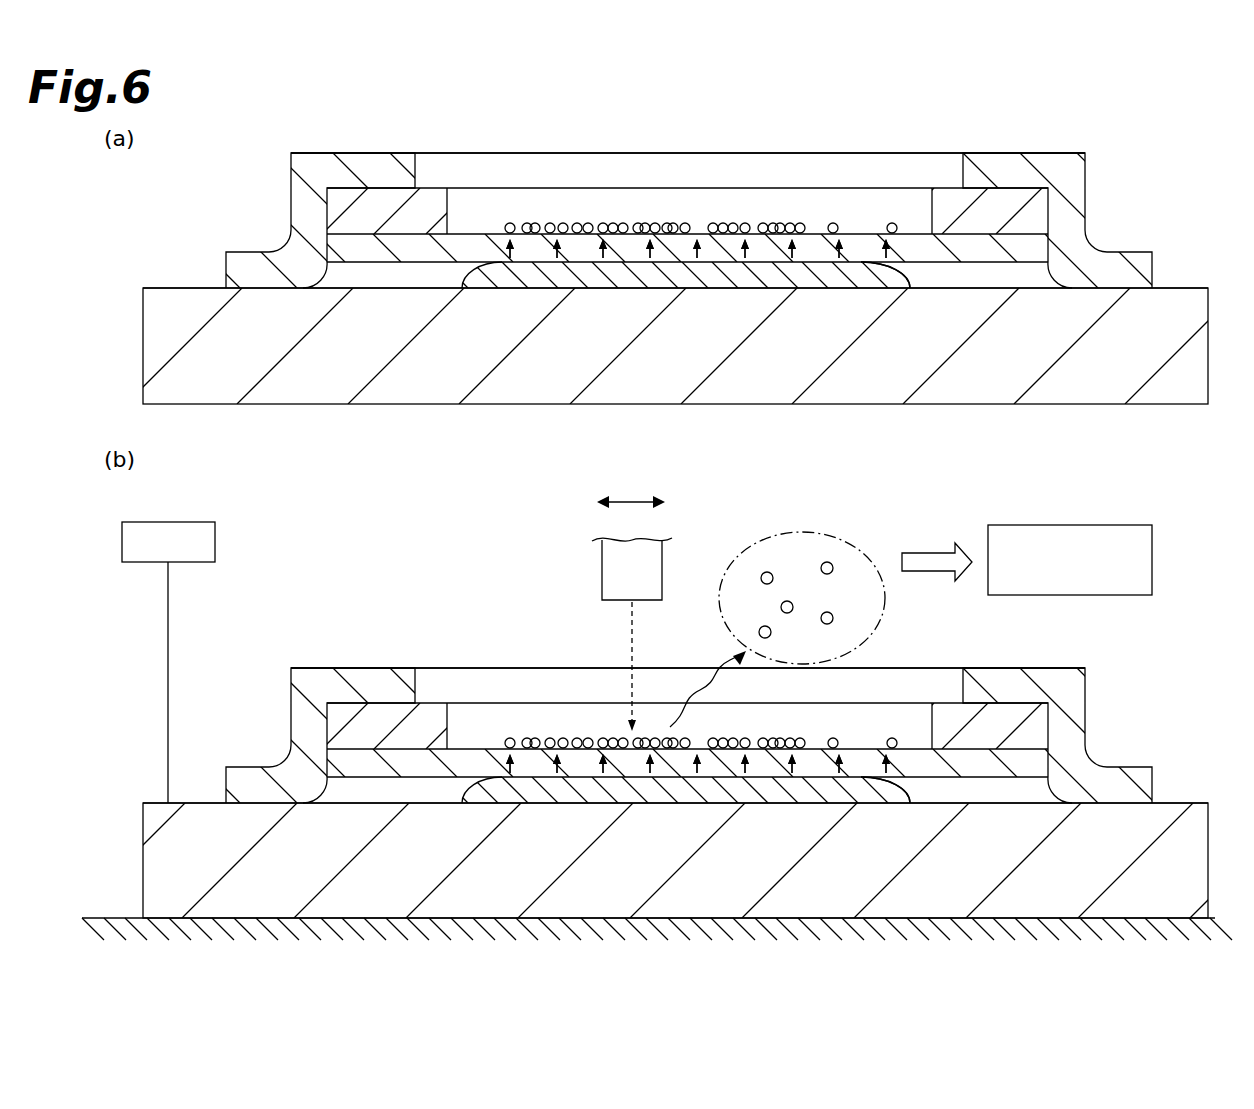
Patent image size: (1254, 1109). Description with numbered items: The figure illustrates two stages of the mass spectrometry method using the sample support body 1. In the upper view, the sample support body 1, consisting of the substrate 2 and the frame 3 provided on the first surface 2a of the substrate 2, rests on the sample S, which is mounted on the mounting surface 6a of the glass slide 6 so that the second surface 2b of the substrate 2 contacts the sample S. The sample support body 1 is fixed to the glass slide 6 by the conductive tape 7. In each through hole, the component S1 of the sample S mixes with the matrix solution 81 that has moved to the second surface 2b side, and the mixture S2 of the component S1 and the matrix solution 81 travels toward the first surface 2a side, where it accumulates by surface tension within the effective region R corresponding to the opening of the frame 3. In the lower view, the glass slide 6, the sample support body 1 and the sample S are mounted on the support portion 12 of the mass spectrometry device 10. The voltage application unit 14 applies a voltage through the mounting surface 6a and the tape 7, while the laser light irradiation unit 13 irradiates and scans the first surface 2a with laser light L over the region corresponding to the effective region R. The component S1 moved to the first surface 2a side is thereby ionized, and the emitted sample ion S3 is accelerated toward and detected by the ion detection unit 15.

The sample support body 1 is at (1014, 178).
The substrate 2 is at (1035, 250).
The first surface 2a is at (470, 230).
The second surface 2b is at (447, 265).
The frame 3 is at (945, 200).
The glass slide 6 is at (1198, 357).
The mounting surface 6a is at (1167, 287).
The tape 7 is at (252, 252).
The mass spectrometry device 10 is at (1143, 512).
The support portion 12 is at (120, 918).
The laser light irradiation unit 13 is at (602, 575).
The voltage application unit 14 is at (216, 538).
The ion detection unit 15 is at (1153, 557).
The laser light L is at (630, 633).
The effective region R is at (905, 219).
The sample S is at (917, 280).
The component S1 is at (745, 243).
The matrix solution 81 is at (698, 506).
The mixture S2 is at (833, 222).
The sample ion S3 is at (827, 561).